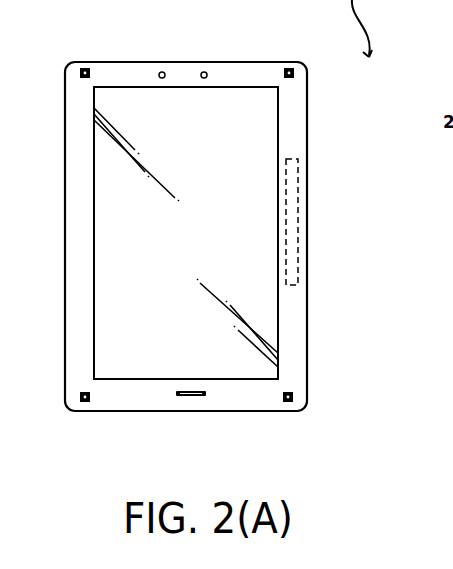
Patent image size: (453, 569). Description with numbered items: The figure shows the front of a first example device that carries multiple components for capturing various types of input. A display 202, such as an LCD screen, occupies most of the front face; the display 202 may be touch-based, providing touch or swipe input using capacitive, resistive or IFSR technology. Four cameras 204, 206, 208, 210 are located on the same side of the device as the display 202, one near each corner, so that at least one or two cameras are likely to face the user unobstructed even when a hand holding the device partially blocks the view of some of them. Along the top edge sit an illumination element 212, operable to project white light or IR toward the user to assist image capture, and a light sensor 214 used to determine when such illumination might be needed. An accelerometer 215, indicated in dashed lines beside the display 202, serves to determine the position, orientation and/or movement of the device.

The display 202 is at (93, 98).
The camera 204 is at (84, 68).
The camera 206 is at (292, 68).
The camera 208 is at (85, 402).
The camera 210 is at (288, 404).
The illumination element 212 is at (160, 72).
The light sensor 214 is at (207, 73).
The accelerometer 215 is at (300, 197).